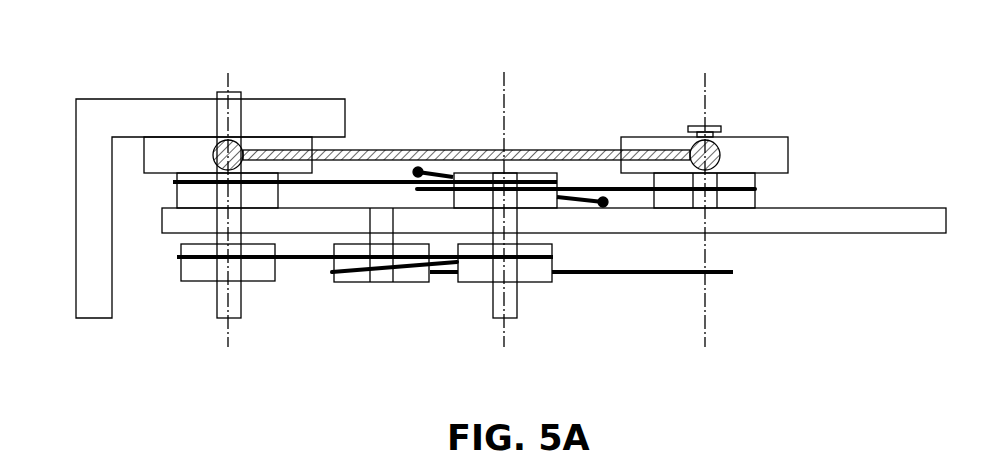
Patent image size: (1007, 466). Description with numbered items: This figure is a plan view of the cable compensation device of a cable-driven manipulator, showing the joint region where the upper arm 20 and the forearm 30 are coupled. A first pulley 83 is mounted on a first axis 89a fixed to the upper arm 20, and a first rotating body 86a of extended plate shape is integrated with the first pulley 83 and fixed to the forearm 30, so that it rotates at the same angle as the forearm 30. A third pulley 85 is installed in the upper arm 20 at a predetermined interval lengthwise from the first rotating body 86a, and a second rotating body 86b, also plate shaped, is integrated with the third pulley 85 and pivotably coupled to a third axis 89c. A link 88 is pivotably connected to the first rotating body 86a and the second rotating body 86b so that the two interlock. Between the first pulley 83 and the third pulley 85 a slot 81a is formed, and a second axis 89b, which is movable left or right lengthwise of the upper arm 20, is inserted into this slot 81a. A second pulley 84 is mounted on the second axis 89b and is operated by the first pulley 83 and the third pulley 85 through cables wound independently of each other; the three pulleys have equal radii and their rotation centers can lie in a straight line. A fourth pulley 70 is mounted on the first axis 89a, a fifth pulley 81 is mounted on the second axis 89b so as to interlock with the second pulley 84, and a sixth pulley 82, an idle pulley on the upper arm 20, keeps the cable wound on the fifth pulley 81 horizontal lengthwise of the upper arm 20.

The forearm 30 is at (91, 99).
The first rotating body 86a is at (172, 153).
The second rotating body 86b is at (647, 137).
The link 88 is at (430, 150).
The first pulley 83 is at (262, 188).
The third pulley 85 is at (753, 182).
The second pulley 84 is at (530, 173).
The upper arm 20 is at (902, 208).
The first axis 89a is at (235, 318).
The second axis 89b is at (512, 318).
The third axis 89c is at (712, 123).
The fourth pulley 70 is at (257, 277).
The sixth pulley 82 is at (403, 282).
The fifth pulley 81 is at (548, 277).
The slot 81a is at (453, 222).